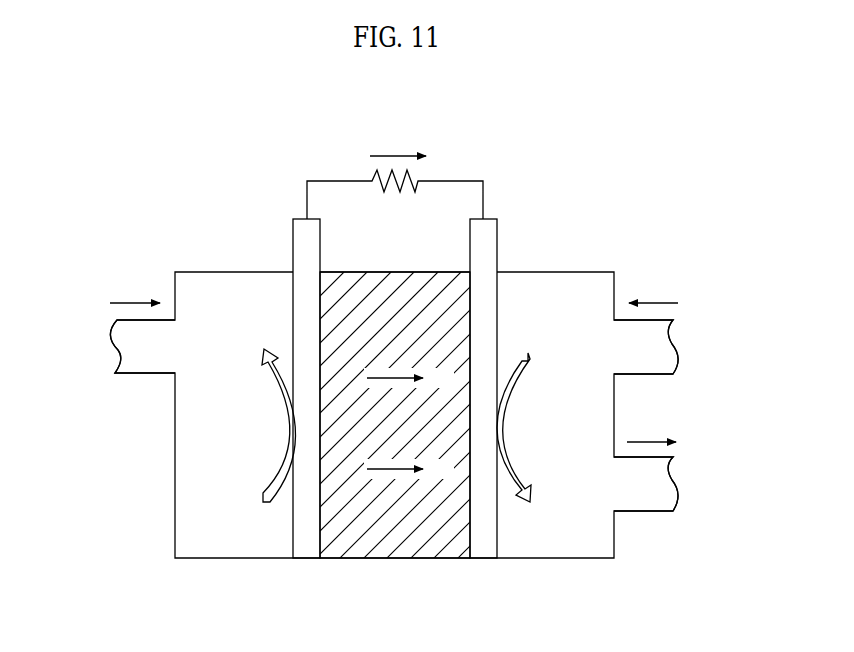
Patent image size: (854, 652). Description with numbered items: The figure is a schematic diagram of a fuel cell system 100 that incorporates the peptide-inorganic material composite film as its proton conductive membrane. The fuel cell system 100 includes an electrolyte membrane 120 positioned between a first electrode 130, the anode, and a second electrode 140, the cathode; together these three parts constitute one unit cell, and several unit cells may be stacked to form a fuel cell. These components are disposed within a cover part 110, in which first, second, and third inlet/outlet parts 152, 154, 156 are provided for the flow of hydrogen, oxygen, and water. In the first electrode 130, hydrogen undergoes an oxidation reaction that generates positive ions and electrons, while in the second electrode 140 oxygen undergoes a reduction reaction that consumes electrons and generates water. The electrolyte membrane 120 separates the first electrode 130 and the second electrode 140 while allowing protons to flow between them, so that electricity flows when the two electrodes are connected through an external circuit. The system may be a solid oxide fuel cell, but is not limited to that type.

The fuel cell system 100 is at (186, 170).
The cover part 110 is at (175, 508).
The electrolyte membrane 120 is at (395, 550).
The first electrode (anode) 130 is at (306, 550).
The second electrode (cathode) 140 is at (482, 550).
The first inlet/outlet part 152 is at (105, 352).
The second inlet/outlet part 154 is at (687, 355).
The third inlet/outlet part 156 is at (687, 487).